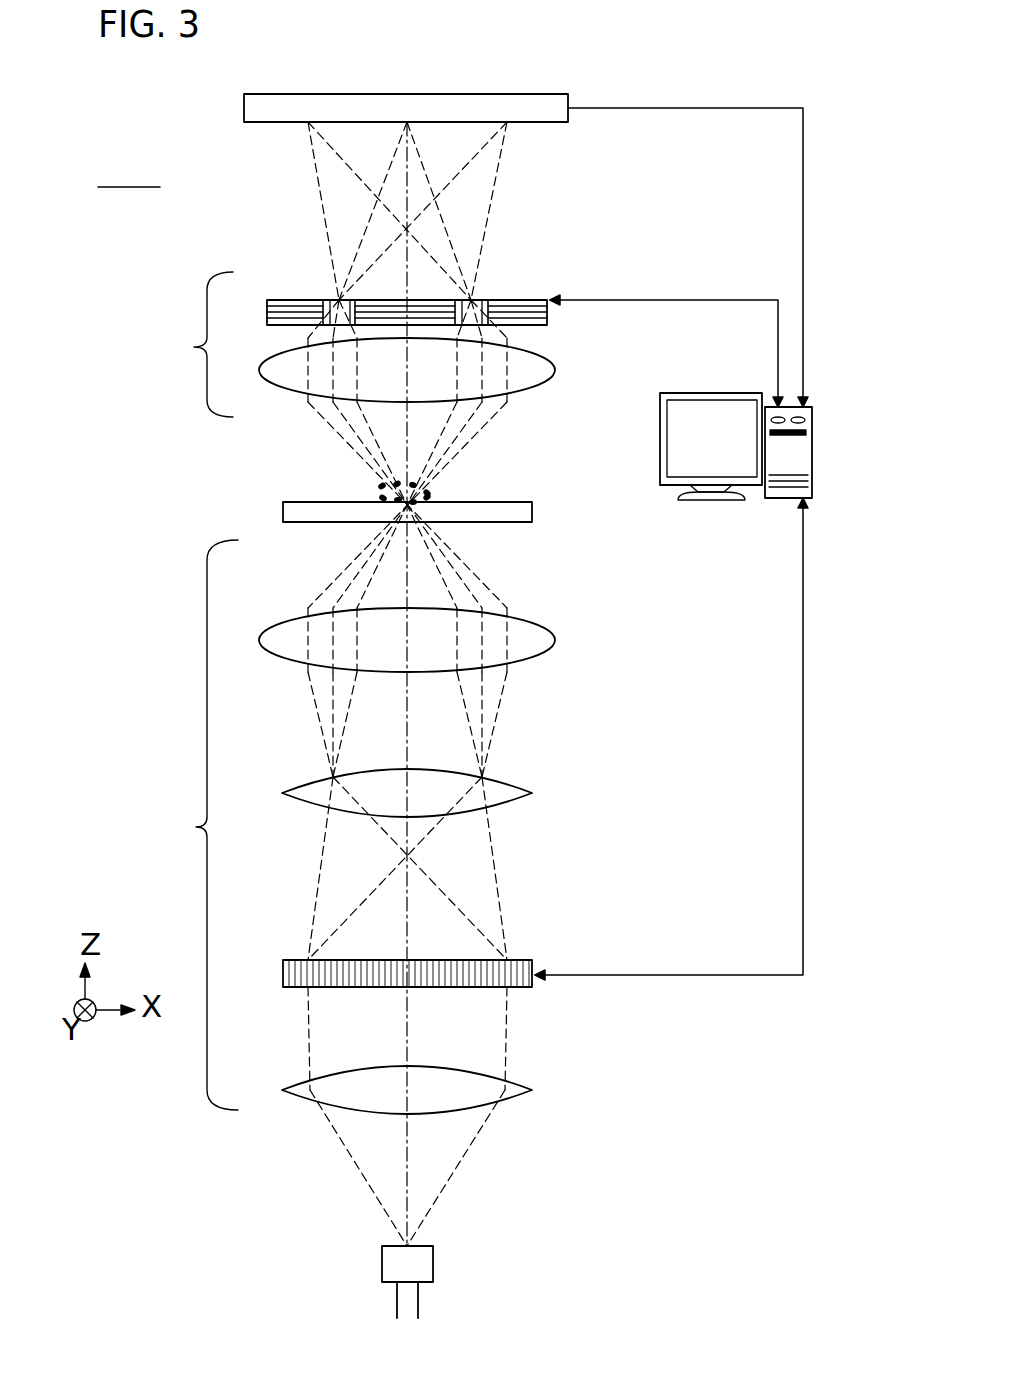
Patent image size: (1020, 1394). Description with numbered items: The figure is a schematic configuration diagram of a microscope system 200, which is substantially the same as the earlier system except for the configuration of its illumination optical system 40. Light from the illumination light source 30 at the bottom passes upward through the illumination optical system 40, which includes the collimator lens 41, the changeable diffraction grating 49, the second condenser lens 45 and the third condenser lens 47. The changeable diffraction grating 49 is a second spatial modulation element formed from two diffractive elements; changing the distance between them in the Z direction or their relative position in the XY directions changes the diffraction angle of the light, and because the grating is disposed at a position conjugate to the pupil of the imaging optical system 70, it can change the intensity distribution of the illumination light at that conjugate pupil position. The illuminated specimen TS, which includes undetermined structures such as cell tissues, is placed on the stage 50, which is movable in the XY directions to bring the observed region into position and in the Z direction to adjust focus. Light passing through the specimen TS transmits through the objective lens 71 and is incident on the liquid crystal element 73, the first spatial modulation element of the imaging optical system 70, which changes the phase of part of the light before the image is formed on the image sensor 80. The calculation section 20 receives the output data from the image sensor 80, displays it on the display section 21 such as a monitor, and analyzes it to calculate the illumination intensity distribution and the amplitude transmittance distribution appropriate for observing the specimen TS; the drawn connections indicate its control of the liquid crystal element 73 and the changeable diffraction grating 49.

The microscope system 200 is at (129, 172).
The image sensor 80 is at (478, 94).
The imaging optical system 70 is at (197, 344).
The liquid crystal element 73 is at (298, 300).
The objective lens 71 is at (289, 392).
The stage 50 is at (305, 515).
The specimen TS is at (432, 488).
The illumination optical system 40 is at (200, 825).
The third condenser lens 47 is at (515, 614).
The second condenser lens 45 is at (515, 790).
The changeable diffraction grating 49 is at (530, 990).
The collimator lens 41 is at (530, 1090).
The illumination light source 30 is at (465, 1287).
The display section 21 is at (699, 480).
The calculation section 20 is at (766, 487).